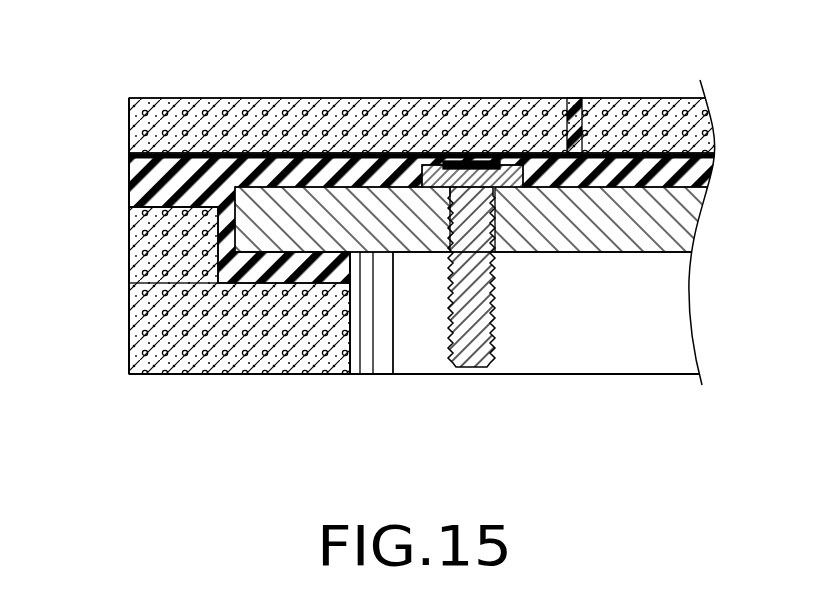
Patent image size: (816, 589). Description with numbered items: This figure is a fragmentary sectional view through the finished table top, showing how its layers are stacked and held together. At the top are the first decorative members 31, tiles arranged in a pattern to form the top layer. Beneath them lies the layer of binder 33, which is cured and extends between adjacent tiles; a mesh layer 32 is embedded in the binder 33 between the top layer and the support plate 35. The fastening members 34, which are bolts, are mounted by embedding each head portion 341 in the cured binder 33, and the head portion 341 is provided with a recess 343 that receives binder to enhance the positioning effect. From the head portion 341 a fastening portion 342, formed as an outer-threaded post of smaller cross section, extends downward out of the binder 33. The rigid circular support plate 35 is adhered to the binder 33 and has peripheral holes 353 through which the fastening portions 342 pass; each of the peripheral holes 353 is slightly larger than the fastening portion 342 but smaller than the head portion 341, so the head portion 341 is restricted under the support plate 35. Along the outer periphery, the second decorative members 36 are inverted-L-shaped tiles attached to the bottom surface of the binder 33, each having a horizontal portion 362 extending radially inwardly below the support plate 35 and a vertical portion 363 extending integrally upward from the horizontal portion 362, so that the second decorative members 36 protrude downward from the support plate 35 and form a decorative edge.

The first decorative members 31 is at (256, 98).
The mesh layer 32 is at (390, 163).
The binder 33 is at (148, 180).
The fastening members 34 is at (422, 352).
The head portion 341 is at (515, 170).
The fastening portion 342 is at (467, 368).
The recess 343 is at (470, 167).
The support plate 35 is at (645, 253).
The peripheral holes 353 is at (495, 224).
The second decorative members 36 is at (153, 302).
The horizontal portion 362 is at (177, 375).
The vertical portion 363 is at (153, 230).